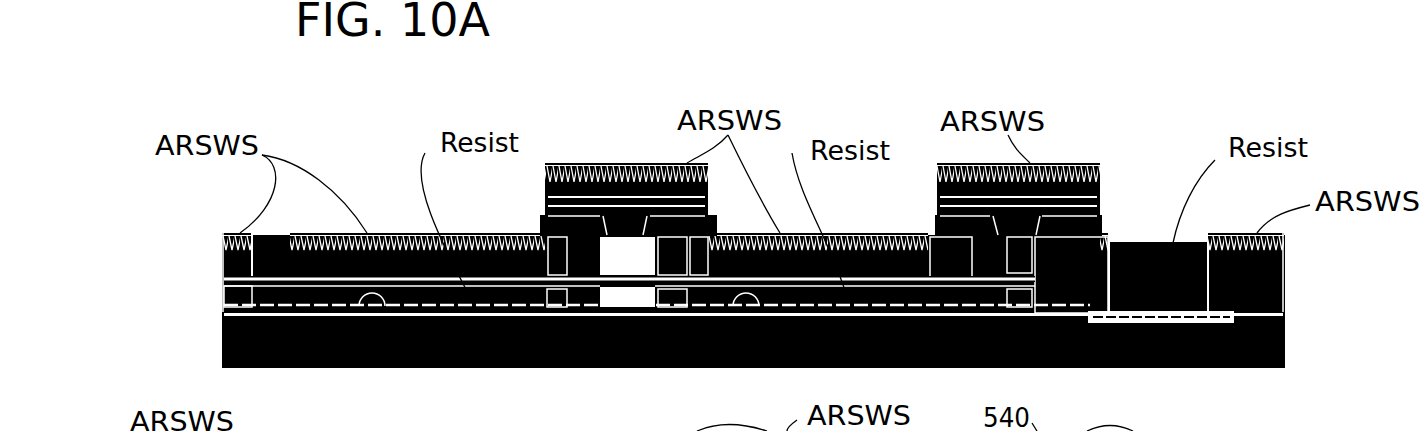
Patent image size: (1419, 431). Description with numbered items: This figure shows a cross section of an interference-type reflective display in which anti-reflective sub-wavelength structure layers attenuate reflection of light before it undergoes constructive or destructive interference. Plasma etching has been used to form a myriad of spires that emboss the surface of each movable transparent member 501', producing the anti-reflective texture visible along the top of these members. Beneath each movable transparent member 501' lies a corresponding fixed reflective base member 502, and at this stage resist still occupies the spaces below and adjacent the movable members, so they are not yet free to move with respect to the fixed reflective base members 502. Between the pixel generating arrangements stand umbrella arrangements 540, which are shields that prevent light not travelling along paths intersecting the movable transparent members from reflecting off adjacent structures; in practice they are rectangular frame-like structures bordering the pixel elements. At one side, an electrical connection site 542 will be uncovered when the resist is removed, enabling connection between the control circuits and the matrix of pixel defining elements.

The umbrella arrangement 540 is at (620, 180).
The movable transparent member 501' is at (629, 207).
The fixed reflective base member 502 is at (380, 303).
The electrical connection site 542 is at (1170, 307).